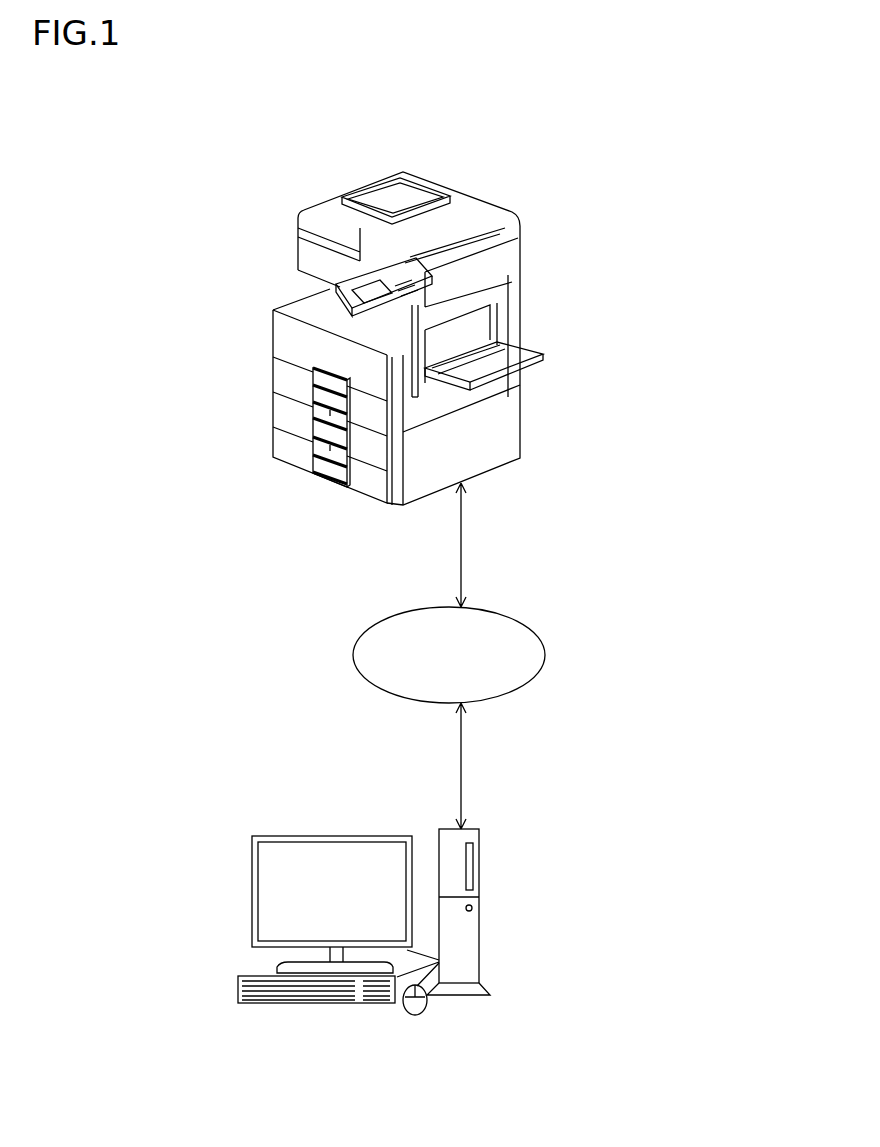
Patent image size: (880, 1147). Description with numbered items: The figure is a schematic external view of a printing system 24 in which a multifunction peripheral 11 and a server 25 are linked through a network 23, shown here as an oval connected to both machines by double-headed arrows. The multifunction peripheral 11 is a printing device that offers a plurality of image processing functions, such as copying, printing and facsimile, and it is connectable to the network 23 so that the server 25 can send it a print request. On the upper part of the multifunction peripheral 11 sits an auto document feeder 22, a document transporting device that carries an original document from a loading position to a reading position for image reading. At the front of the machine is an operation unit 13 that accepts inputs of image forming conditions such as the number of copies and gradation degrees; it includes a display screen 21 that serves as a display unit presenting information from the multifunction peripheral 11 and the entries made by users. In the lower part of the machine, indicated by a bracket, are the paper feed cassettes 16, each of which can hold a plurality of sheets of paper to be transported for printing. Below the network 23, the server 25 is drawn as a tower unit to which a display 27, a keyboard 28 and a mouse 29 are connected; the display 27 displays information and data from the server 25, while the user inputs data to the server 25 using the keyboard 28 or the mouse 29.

The multifunction peripheral 11 is at (560, 322).
The operation unit 13 is at (340, 265).
The paper feed cassettes 16 is at (238, 355).
The display screen 21 is at (338, 282).
The auto document feeder (ADF) 22 is at (430, 191).
The network 23 is at (545, 633).
The printing system 24 is at (683, 200).
The server 25 is at (458, 997).
The display 27 is at (309, 836).
The keyboard 28 is at (260, 1003).
The mouse 29 is at (416, 1013).